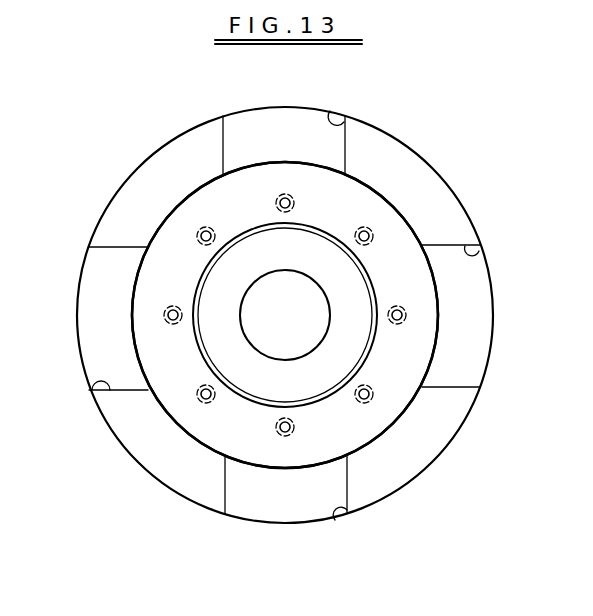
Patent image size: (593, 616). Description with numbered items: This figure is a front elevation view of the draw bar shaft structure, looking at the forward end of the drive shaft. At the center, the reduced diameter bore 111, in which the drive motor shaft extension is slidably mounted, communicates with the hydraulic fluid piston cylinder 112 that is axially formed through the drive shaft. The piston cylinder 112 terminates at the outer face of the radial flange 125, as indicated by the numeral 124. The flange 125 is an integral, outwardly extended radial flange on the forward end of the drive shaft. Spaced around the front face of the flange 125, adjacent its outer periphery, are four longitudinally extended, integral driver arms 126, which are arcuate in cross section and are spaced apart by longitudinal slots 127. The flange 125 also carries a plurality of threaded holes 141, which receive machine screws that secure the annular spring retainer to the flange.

The reduced diameter bore 111 is at (328, 318).
The hydraulic fluid piston cylinder 112 is at (320, 240).
The termination of piston cylinder at flange outer face 124 is at (405, 355).
The radial flange 125 is at (220, 198).
The driver arms 126 is at (157, 172).
The longitudinal slots 127 is at (330, 111).
The threaded holes 141 is at (397, 313).